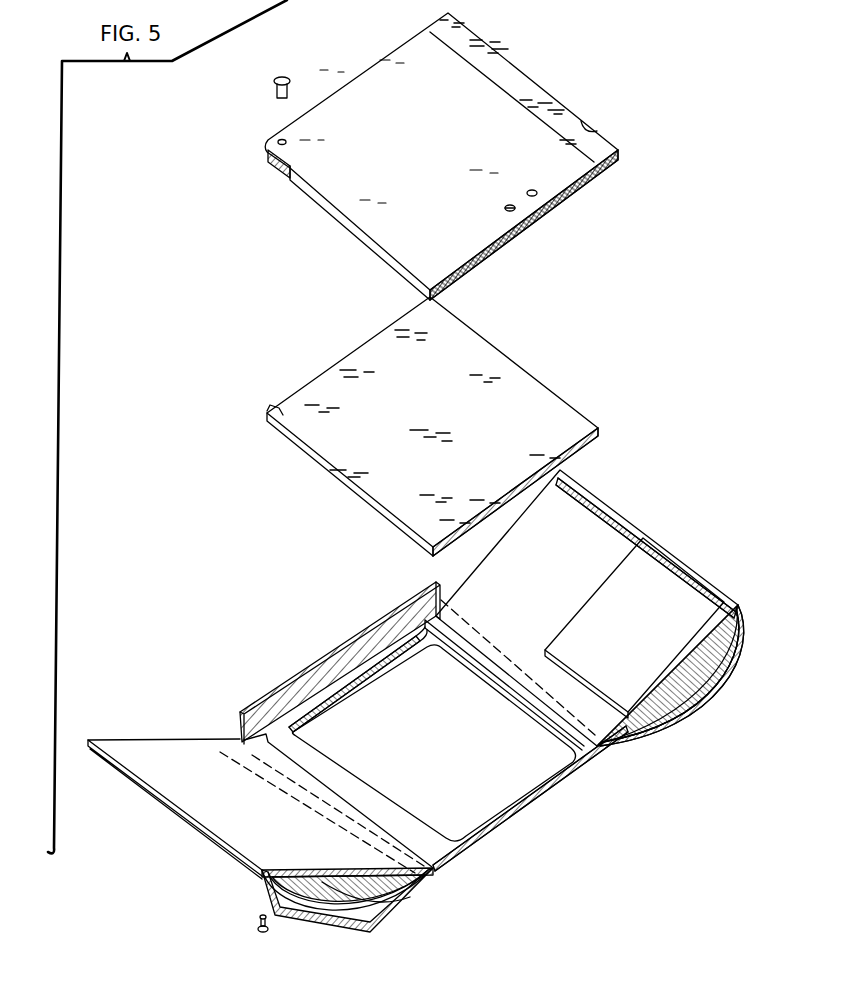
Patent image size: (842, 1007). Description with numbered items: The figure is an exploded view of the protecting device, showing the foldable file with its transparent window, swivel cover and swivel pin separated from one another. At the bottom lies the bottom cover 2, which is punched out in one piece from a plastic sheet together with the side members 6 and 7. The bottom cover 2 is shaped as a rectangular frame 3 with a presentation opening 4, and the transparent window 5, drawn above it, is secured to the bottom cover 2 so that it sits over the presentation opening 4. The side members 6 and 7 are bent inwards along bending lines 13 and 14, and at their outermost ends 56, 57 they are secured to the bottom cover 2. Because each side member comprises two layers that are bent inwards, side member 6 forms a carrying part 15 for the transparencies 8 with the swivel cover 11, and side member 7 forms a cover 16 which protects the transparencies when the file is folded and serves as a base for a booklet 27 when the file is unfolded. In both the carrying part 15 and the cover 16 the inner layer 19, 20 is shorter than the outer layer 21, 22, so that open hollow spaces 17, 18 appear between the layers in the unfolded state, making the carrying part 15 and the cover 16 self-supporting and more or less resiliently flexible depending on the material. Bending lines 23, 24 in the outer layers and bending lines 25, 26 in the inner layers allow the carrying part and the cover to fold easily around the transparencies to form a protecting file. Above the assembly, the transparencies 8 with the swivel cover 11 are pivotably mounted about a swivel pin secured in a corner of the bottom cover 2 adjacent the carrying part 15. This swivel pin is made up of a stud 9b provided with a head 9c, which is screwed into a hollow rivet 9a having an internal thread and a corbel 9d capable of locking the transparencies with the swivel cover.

The bottom cover 2 is at (568, 797).
The rectangular frame 3 is at (492, 823).
The presentation opening 4 is at (500, 772).
The transparent window 5 is at (365, 437).
The side member 6 is at (285, 829).
The side member 7 is at (606, 634).
The transparencies 8 is at (522, 85).
The hollow rivet 9a is at (275, 91).
The stud 9b is at (260, 916).
The head 9c is at (263, 933).
The corbel 9d is at (285, 77).
The swivel cover 11 is at (330, 160).
The bending line 13 is at (163, 802).
The bending line 14 is at (625, 520).
The carrying part 15 is at (175, 758).
The cover 16 is at (585, 513).
The open hollow space 17 is at (330, 877).
The open hollow space 18 is at (673, 693).
The inner layer 19 is at (307, 875).
The inner layer 20 is at (653, 712).
The outer layer 21 is at (420, 890).
The outer layer 22 is at (707, 670).
The bending line 23 is at (373, 900).
The bending line 24 is at (612, 744).
The bending line 25 is at (255, 750).
The bending line 26 is at (604, 746).
The booklet 27 is at (647, 583).
The outermost end 56 is at (450, 853).
The outermost end 57 is at (600, 735).